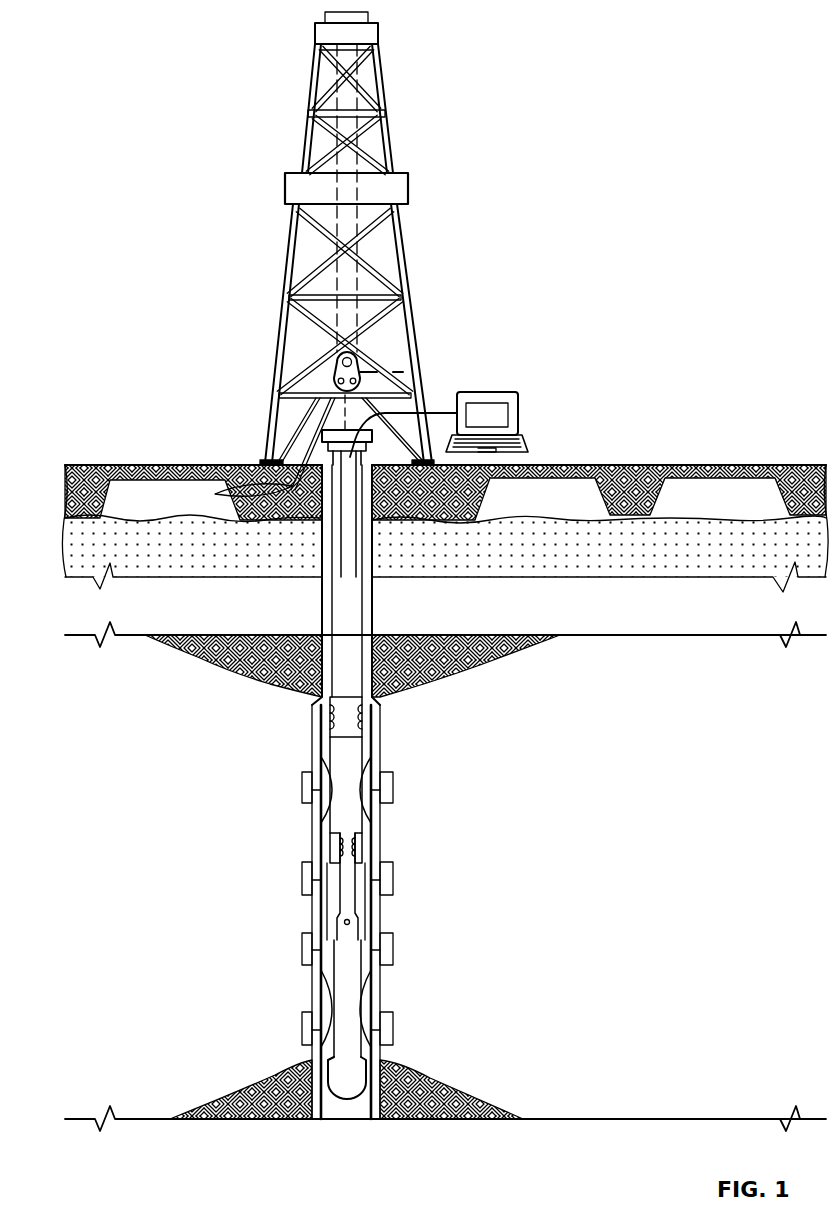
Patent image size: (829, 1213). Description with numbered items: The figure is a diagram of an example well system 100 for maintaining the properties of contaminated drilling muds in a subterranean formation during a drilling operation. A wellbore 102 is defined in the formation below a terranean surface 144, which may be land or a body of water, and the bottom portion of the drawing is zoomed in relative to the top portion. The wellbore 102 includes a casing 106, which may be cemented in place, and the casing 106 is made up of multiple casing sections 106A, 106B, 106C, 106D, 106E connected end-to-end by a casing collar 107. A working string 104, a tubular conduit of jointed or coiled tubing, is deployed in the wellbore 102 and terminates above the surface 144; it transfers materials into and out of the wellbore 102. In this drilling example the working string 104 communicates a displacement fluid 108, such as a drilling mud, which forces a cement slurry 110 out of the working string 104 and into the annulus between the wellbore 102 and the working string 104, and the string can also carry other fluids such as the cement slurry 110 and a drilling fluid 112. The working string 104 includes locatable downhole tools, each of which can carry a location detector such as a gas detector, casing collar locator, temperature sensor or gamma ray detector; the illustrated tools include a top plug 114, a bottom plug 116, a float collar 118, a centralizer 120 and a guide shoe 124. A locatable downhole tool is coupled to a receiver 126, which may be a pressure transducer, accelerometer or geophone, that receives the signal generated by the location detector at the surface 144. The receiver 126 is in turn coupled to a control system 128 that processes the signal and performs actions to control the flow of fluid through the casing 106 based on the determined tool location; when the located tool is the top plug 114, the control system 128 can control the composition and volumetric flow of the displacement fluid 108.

The well system 100 is at (112, 982).
The wellbore 102 is at (371, 642).
The working string 104 is at (372, 562).
The casing 106 is at (381, 728).
The casing section 106A is at (380, 757).
The casing section 106B is at (380, 835).
The casing section 106C is at (380, 905).
The casing section 106D is at (378, 1002).
The casing section 106E is at (378, 1078).
The casing collar 107 is at (393, 880).
The displacement fluid 108 is at (345, 642).
The cement slurry 110 is at (385, 803).
The drilling fluid 112 is at (352, 973).
The top plug 114 is at (333, 702).
The bottom plug 116 is at (333, 838).
The float collar 118 is at (333, 898).
The centralizer 120 is at (330, 978).
The guide shoe 124 is at (338, 1078).
The receiver 126 is at (330, 460).
The control system 128 is at (522, 407).
The terranean surface 144 is at (792, 437).